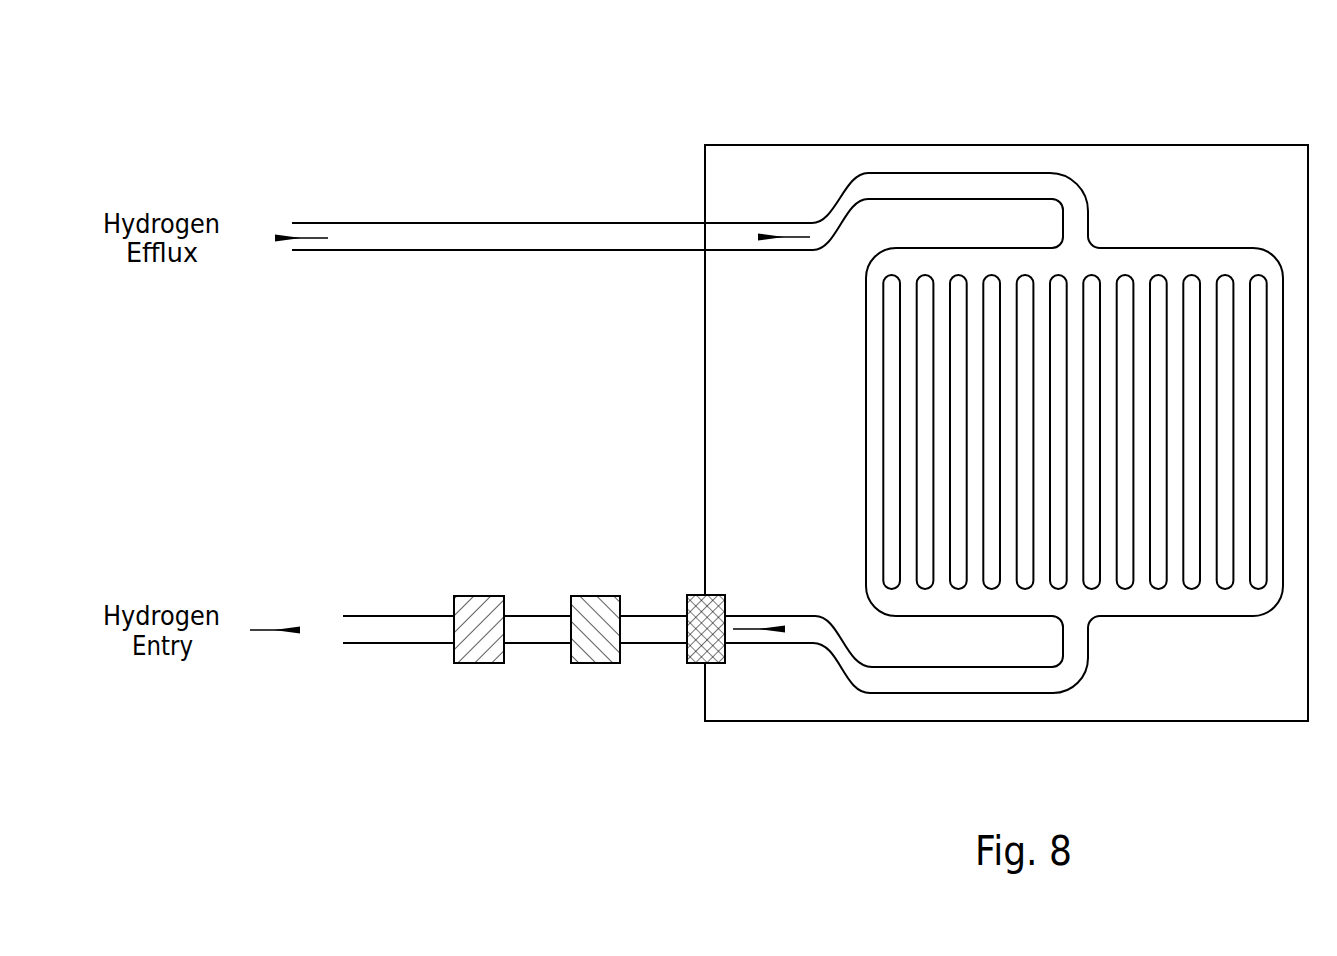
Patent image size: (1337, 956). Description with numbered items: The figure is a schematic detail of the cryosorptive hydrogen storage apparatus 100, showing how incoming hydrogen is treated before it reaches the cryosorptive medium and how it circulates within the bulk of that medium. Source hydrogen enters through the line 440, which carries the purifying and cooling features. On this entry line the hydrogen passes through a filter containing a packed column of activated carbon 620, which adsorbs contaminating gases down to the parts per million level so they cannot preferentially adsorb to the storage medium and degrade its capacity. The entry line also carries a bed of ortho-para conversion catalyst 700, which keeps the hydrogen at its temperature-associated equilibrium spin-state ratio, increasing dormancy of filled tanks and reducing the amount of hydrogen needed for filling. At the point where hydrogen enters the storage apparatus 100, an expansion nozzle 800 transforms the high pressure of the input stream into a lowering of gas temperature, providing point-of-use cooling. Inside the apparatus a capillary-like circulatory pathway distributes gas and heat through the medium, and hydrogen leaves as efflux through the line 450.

The fuel cell plate with serpentine flow field 100 is at (1145, 130).
The line 450 is at (489, 222).
The line 440 is at (398, 616).
The ortho-para conversion catalyst 700 is at (477, 665).
The filter containing a packed column of activated carbon 620 is at (595, 665).
The expansion nozzle 800 is at (690, 594).